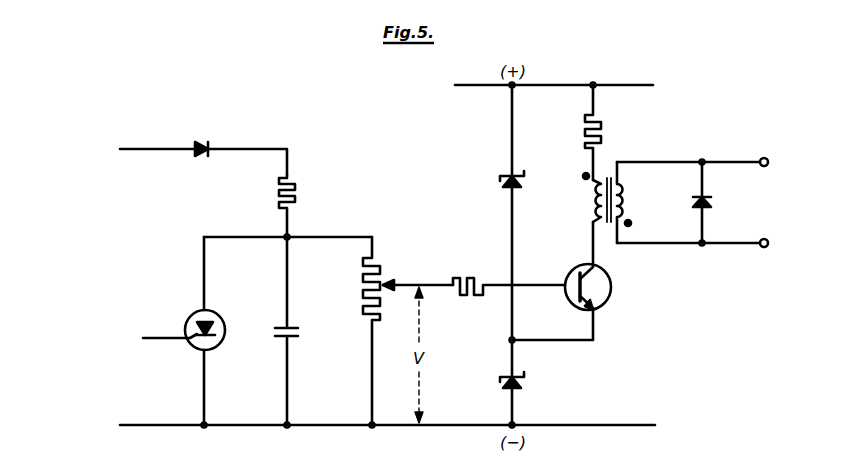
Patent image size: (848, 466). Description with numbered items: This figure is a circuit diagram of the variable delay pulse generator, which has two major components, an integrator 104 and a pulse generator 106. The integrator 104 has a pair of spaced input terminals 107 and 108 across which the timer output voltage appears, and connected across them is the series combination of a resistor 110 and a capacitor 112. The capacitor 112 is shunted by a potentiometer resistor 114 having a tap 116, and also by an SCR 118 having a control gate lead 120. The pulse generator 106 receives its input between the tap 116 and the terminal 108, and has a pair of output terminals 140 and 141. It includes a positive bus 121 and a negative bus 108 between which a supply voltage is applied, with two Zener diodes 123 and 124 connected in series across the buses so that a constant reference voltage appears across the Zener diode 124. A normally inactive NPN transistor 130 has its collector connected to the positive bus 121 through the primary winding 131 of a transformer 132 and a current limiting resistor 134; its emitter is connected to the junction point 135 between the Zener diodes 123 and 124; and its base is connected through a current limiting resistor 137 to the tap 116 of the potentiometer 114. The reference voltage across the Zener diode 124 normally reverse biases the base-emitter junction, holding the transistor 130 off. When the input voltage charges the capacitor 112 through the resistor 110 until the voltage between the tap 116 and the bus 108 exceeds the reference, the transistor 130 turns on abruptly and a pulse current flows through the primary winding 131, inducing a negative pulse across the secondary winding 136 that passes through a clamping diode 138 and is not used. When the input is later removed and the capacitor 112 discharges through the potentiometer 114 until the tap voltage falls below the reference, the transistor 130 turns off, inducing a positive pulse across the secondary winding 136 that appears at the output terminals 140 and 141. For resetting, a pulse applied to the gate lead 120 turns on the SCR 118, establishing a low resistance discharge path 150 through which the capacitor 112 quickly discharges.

The integrator 104 is at (327, 262).
The pulse generator 106 is at (647, 273).
The input terminal 107 is at (153, 148).
The negative bus 108 is at (163, 427).
The resistor 110 is at (278, 193).
The capacitor 112 is at (278, 327).
The potentiometer resistor 114 is at (362, 292).
The tap 116 is at (398, 283).
The SCR 118 is at (222, 344).
The gate lead 120 is at (164, 339).
The positive bus 121 is at (562, 84).
The Zener diode 123 is at (500, 180).
The Zener diode 124 is at (522, 384).
The NPN transistor 130 is at (607, 300).
The primary winding 131 is at (583, 205).
The transformer 132 is at (610, 174).
The current limiting resistor 134 is at (585, 120).
The junction point 135 is at (510, 340).
The secondary winding 136 is at (630, 190).
The current limiting resistor 137 is at (471, 277).
The clamping diode 138 is at (709, 199).
The output terminal 140 is at (766, 157).
The output terminal 141 is at (767, 249).
The discharge path 150 is at (204, 271).